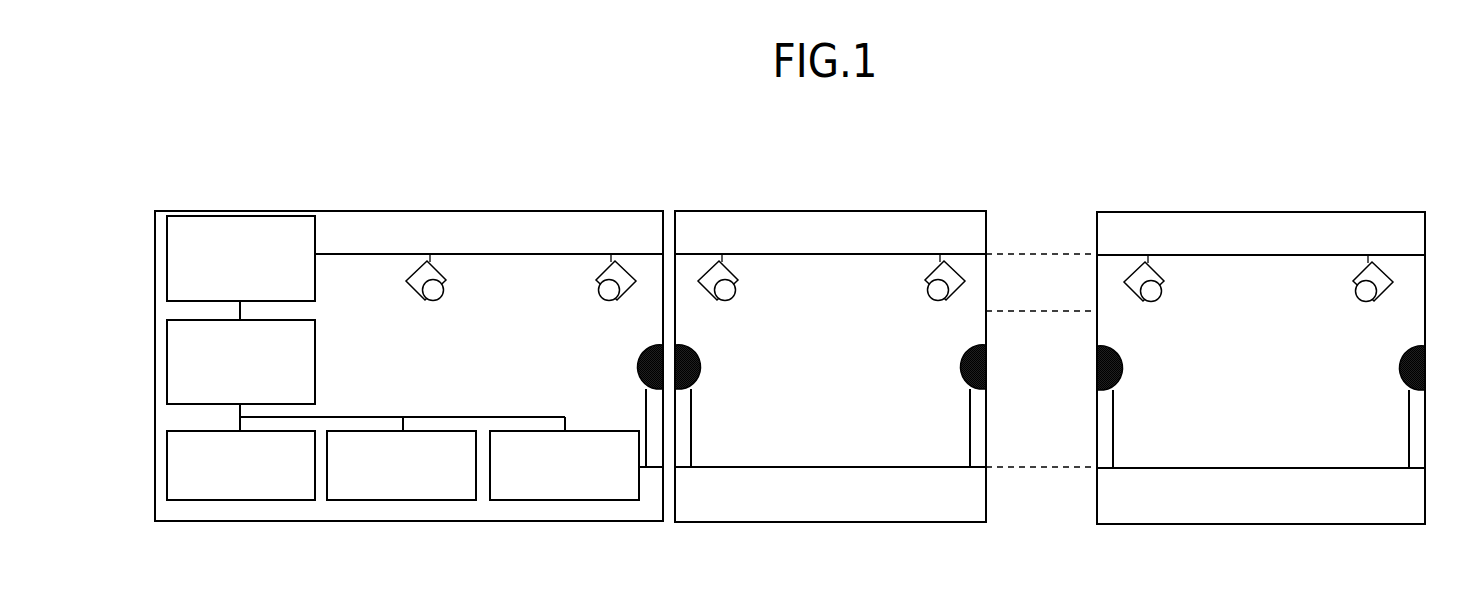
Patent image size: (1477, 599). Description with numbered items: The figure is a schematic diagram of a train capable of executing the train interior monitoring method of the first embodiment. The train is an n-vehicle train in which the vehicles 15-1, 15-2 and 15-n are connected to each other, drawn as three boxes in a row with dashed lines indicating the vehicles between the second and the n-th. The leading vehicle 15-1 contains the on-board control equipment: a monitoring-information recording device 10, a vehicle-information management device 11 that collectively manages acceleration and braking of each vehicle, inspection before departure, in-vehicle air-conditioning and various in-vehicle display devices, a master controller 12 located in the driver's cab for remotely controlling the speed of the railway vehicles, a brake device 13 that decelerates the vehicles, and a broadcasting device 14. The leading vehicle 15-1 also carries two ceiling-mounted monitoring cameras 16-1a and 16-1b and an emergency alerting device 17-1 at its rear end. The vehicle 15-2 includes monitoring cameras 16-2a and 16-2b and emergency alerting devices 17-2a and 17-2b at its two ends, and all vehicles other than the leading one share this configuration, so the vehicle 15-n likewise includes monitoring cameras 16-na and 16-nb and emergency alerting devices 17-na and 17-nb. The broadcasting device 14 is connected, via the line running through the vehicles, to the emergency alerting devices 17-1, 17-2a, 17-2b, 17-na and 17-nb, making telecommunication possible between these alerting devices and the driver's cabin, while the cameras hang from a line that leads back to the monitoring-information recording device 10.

The monitoring-information recording device 10 is at (167, 253).
The vehicle-information management device 11 is at (167, 360).
The master controller 12 is at (167, 465).
The brake device 13 is at (351, 500).
The broadcasting device 14 is at (517, 500).
The vehicle 15-1 is at (593, 211).
The vehicle 15-2 is at (914, 211).
The vehicle 15-n is at (1354, 212).
The monitoring camera 16-1a is at (438, 298).
The monitoring camera 16-1b is at (609, 300).
The monitoring camera 16-2a is at (730, 298).
The monitoring camera 16-2b is at (940, 300).
The monitoring camera 16-na is at (1156, 299).
The monitoring camera 16-nb is at (1367, 302).
The emergency alerting device 17-1 is at (642, 370).
The emergency alerting device 17-2a is at (696, 370).
The emergency alerting device 17-2b is at (963, 372).
The emergency alerting device 17-na is at (1119, 375).
The emergency alerting device 17-nb is at (1407, 375).